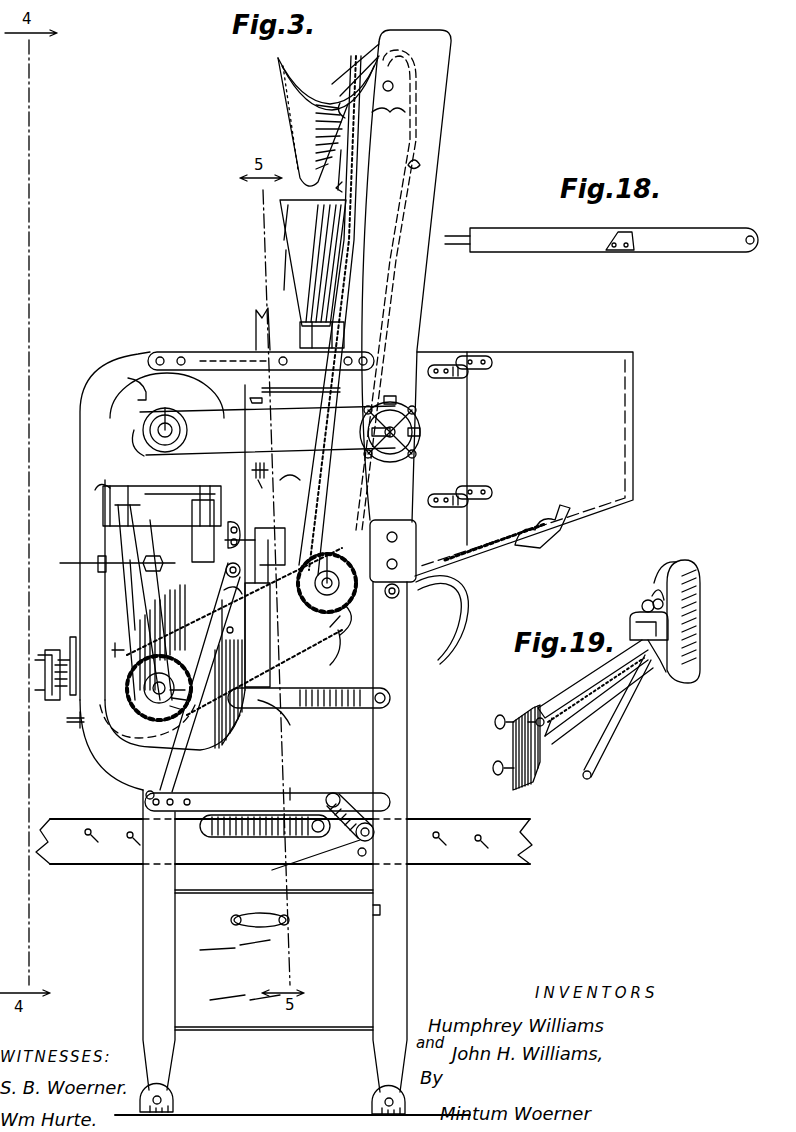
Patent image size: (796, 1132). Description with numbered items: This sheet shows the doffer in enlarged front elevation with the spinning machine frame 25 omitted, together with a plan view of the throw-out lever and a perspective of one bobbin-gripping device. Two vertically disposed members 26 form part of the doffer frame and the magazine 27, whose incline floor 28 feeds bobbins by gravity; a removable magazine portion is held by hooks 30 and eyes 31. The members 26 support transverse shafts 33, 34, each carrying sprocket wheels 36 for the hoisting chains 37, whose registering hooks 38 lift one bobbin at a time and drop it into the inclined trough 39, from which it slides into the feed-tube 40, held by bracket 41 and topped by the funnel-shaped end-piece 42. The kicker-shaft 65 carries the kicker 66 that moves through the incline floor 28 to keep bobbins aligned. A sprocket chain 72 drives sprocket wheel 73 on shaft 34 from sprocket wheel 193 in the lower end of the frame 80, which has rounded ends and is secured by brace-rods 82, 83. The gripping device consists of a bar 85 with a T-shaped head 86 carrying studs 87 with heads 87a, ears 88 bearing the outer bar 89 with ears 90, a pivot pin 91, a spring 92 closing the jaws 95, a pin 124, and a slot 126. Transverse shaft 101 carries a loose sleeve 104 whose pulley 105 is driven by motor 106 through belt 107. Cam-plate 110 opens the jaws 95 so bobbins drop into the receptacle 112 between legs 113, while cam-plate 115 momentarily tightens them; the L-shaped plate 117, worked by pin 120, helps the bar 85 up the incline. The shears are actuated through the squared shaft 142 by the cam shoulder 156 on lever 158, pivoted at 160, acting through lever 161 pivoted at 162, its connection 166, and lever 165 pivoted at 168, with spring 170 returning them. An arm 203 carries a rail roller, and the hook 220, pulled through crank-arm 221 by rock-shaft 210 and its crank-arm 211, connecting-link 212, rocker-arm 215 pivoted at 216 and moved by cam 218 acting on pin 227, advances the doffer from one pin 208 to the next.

In FIG. 3, the spinning machine frame 25 is at (68, 826).
In FIG. 3, the vertically disposed parallel members 26 is at (420, 292).
In FIG. 3, the magazine 27 is at (524, 449).
In FIG. 3, the incline floor 28 is at (548, 532).
In FIG. 3, the hooks 30 is at (458, 380).
In FIG. 3, the eyes 31 is at (470, 370).
In FIG. 3, the transverse shaft 33 is at (392, 82).
In FIG. 3, the transverse shaft 34 is at (327, 558).
In FIG. 3, the sprocket wheels 36 is at (360, 62).
In FIG. 3, the hoisting chains 37 is at (350, 178).
In FIG. 3, the hooks 38 is at (422, 163).
In FIG. 3, the inclined trough 39 is at (300, 104).
In FIG. 3, the feed-tube 40 is at (330, 390).
In FIG. 3, the bracket 41 is at (335, 335).
In FIG. 3, the funnel-shaped end-piece 42 is at (298, 268).
In FIG. 3, the kicker-shaft 65 is at (398, 594).
In FIG. 3, the kicker 66 is at (468, 600).
In FIG. 3, the sprocket chain 72 is at (312, 640).
In FIG. 3, the sprocket wheel 73 is at (309, 665).
In FIG. 3, the frame 80 is at (128, 376).
In FIG. 3, the brace-rod 82 is at (225, 362).
In FIG. 3, the brace-rod 83 is at (356, 712).
In FIG. 19, the bar 85 is at (580, 700).
In FIG. 19, the T-shaped head 86 is at (513, 748).
In FIG. 19, the studs 87 is at (512, 718).
In FIG. 19, the heads 87a is at (492, 768).
In FIG. 19, the ears 88 is at (632, 628).
In FIG. 3, the outer bar 89 is at (50, 655).
In FIG. 19, the outer bar 89 is at (600, 742).
In FIG. 19, the ears 90 is at (642, 604).
In FIG. 19, the pivot pin 91 is at (654, 592).
In FIG. 19, the spring 92 is at (662, 680).
In FIG. 3, the jaws 95 is at (52, 712).
In FIG. 19, the jaws 95 is at (684, 560).
In FIG. 3, the transverse shaft 101 is at (165, 424).
In FIG. 3, the loose sleeve 104 is at (190, 432).
In FIG. 3, the pulley 105 is at (142, 430).
In FIG. 3, the motor 106 is at (420, 450).
In FIG. 3, the belt 107 is at (352, 440).
In FIG. 3, the cam-plate 110 is at (295, 717).
In FIG. 3, the receptacle 112 is at (274, 971).
In FIG. 3, the legs 113 is at (145, 968).
In FIG. 3, the cam-plate 115 is at (255, 537).
In FIG. 3, the L-shaped plate 117 is at (230, 552).
In FIG. 3, the pin 120 is at (258, 397).
In FIG. 19, the pin 124 is at (540, 716).
In FIG. 19, the slot 126 is at (565, 748).
In FIG. 3, the shaft 142 is at (96, 563).
In FIG. 3, the cam shoulder 156 is at (163, 492).
In FIG. 18, the cam shoulder 156 is at (620, 234).
In FIG. 3, the lever 158 is at (202, 490).
In FIG. 18, the lever 158 is at (540, 236).
In FIG. 3, the pivot 160 is at (207, 531).
In FIG. 3, the lever 161 is at (125, 518).
In FIG. 3, the pivot 162 is at (129, 381).
In FIG. 3, the lever 165 is at (128, 605).
In FIG. 3, the pivot 166 is at (101, 653).
In FIG. 3, the pivot 168 is at (122, 748).
In FIG. 3, the spring 170 is at (108, 492).
In FIG. 3, the sprocket wheel 193 is at (159, 688).
In FIG. 3, the arm 203 is at (262, 322).
In FIG. 3, the pins 208 is at (88, 832).
In FIG. 3, the rock-shaft 210 is at (345, 846).
In FIG. 3, the crank-arm 211 is at (350, 782).
In FIG. 3, the connecting-link 212 is at (275, 790).
In FIG. 3, the rocker-arm 215 is at (175, 785).
In FIG. 3, the pivot 216 is at (216, 593).
In FIG. 3, the cam 218 is at (138, 800).
In FIG. 3, the hook 220 is at (248, 838).
In FIG. 3, the crank-arm 221 is at (270, 883).
In FIG. 3, the pin 227 is at (190, 640).